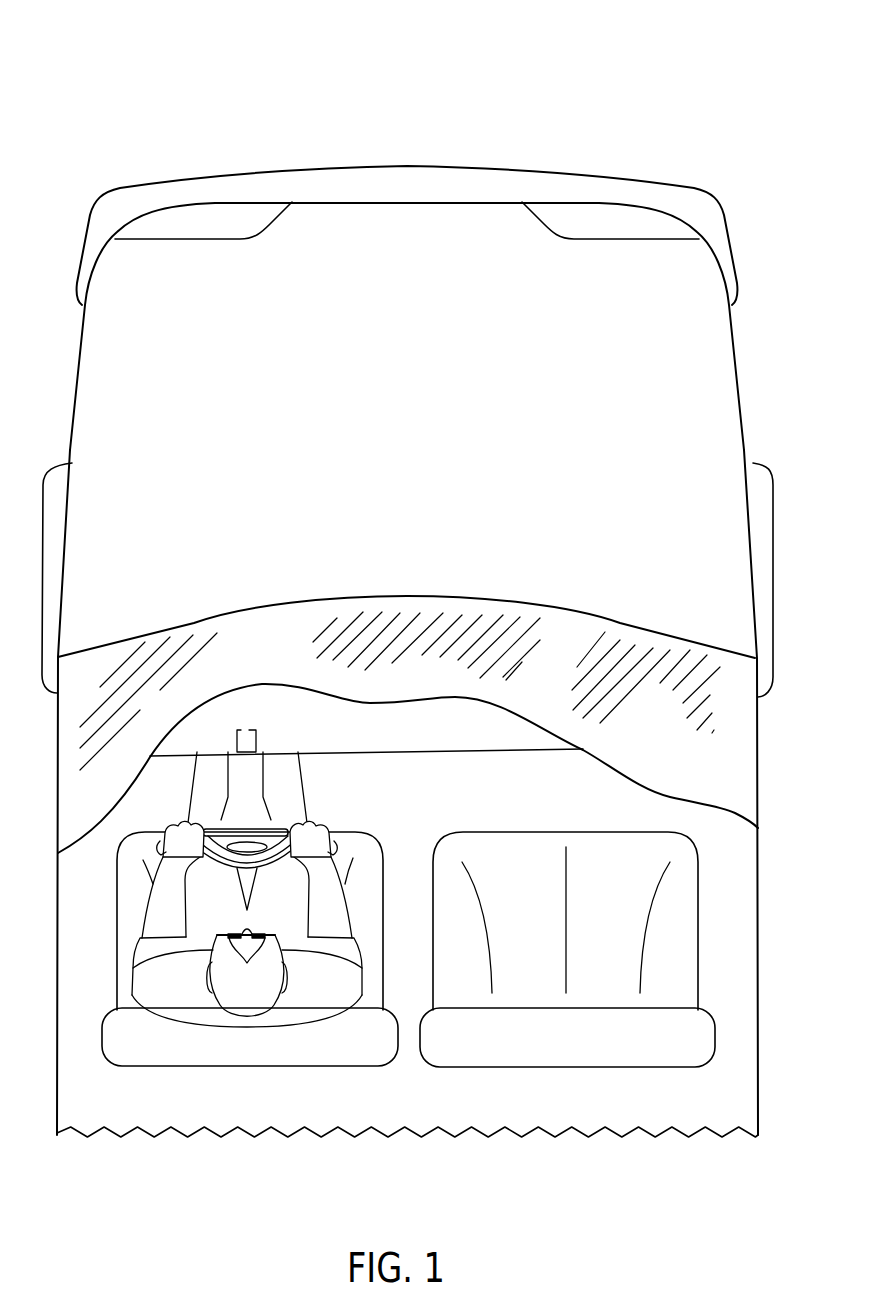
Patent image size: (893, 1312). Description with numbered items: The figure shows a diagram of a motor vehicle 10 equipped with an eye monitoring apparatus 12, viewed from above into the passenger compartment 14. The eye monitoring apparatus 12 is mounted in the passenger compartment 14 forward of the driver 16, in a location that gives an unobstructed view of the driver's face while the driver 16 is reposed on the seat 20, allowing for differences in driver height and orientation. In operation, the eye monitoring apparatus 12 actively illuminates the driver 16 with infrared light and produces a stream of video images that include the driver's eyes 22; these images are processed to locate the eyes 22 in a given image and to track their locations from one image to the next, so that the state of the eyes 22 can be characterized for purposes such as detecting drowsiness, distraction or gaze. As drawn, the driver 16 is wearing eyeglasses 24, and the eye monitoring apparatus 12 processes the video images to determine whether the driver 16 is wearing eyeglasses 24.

The motor vehicle 10 is at (150, 128).
The eye monitoring apparatus 12 is at (243, 730).
The passenger compartment 14 is at (380, 1085).
The driver 16 is at (192, 1013).
The seat 20 is at (127, 894).
The driver's eyes 22 is at (247, 924).
The eyeglasses 24 is at (268, 931).